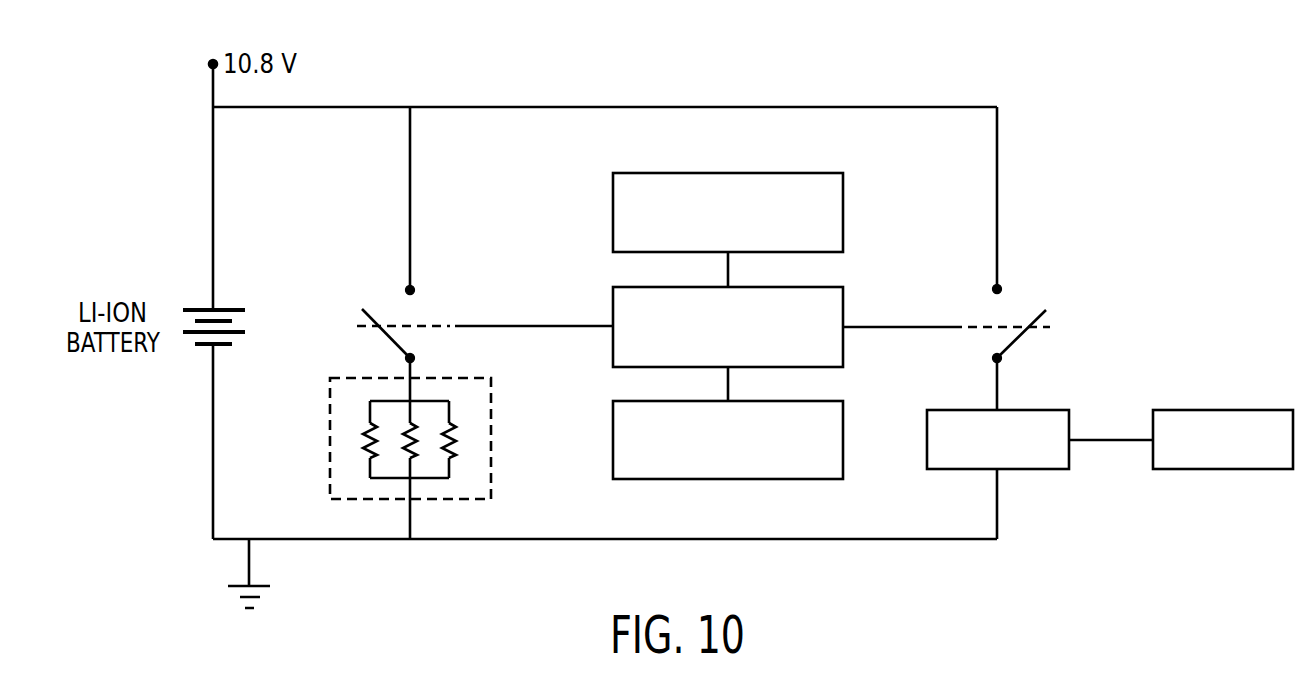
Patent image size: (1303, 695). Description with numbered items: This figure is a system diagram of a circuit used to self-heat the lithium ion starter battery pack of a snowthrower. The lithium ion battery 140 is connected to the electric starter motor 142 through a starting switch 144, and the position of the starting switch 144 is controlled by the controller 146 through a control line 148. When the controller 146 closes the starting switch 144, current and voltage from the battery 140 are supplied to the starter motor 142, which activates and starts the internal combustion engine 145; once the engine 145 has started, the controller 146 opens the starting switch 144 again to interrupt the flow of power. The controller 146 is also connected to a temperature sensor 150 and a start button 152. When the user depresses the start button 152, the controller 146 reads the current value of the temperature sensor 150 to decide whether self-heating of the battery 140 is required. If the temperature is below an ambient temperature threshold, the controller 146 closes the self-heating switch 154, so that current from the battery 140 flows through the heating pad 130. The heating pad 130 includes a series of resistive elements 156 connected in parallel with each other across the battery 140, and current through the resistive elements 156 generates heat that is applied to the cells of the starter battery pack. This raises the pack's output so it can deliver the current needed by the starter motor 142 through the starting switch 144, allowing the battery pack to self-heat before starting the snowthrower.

The heating pad 130 is at (370, 500).
The lithium ion battery 140 is at (205, 308).
The electric starter motor 142 is at (1027, 469).
The starting switch 144 is at (1012, 345).
The internal combustion engine 145 is at (1223, 410).
The controller 146 is at (843, 310).
The control line 148 is at (868, 327).
The temperature sensor 150 is at (843, 440).
The start button 152 is at (843, 212).
The self-heating switch 154 is at (366, 316).
The resistive elements 156 is at (451, 434).